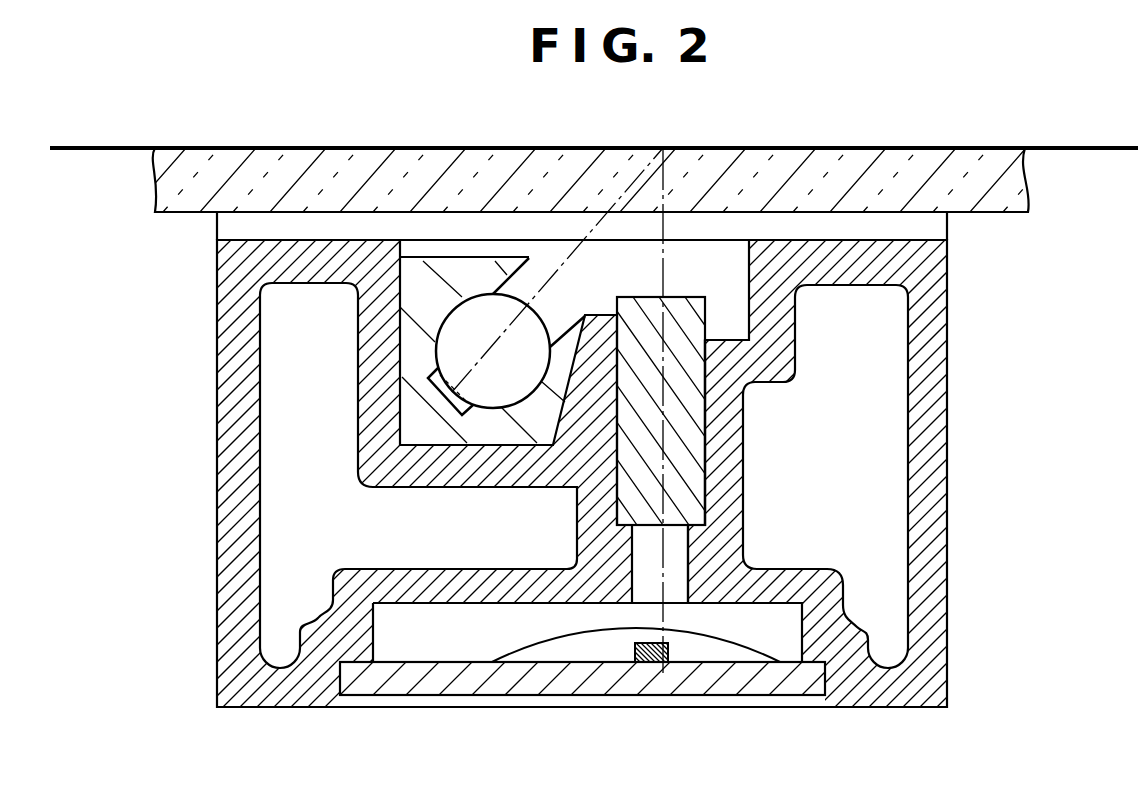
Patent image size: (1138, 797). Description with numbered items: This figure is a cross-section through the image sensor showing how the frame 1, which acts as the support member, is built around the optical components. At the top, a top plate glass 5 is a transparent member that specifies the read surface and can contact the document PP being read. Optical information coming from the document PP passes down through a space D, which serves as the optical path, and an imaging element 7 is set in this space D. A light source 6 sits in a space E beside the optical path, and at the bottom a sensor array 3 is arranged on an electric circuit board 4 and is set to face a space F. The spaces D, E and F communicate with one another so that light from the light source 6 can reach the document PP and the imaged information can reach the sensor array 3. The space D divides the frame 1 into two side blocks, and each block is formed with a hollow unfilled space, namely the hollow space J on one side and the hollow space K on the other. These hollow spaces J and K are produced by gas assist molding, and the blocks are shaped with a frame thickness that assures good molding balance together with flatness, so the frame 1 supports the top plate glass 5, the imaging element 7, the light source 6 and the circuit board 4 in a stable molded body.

The document PP is at (1105, 146).
The top plate glass 5 is at (1030, 183).
The frame 1 is at (237, 523).
The space E is at (455, 250).
The light source 6 is at (413, 346).
The imaging element 7 is at (705, 372).
The space D is at (712, 468).
The hollow space K is at (872, 542).
The hollow space J is at (298, 437).
The space F is at (775, 632).
The sensor array 3 is at (640, 663).
The electric circuit board 4 is at (713, 680).